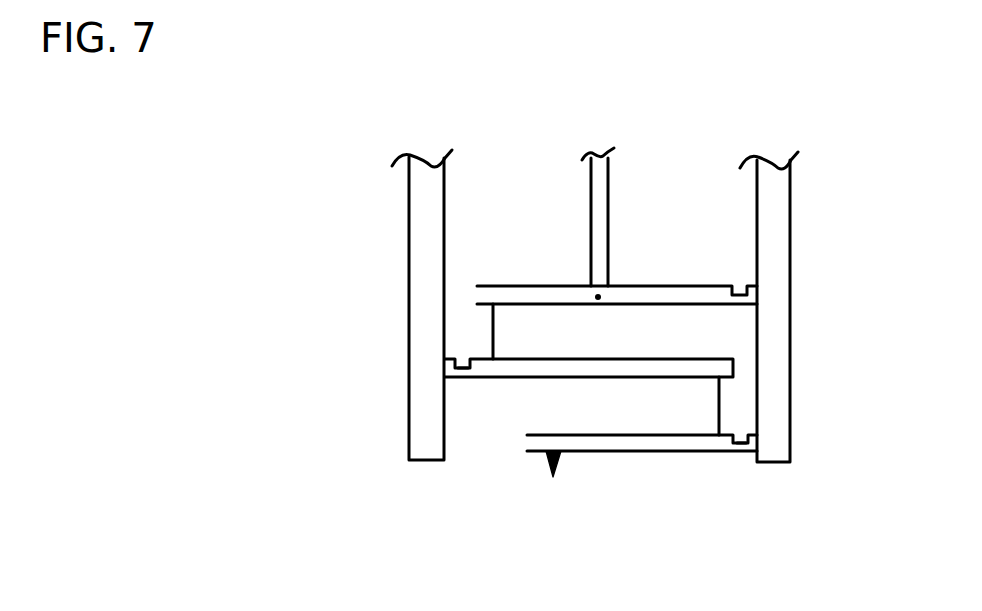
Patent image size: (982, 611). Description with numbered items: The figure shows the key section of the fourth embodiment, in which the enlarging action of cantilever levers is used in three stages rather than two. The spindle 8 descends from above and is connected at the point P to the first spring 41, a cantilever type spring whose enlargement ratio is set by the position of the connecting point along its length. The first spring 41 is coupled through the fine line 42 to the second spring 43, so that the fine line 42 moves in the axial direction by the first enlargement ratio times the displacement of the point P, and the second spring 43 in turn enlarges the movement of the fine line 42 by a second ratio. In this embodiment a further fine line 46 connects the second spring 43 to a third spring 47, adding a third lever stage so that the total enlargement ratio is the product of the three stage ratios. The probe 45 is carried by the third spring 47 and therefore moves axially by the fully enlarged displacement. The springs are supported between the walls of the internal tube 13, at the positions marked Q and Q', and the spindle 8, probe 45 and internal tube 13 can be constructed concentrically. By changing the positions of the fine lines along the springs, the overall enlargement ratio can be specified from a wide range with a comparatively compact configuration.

The spindle 8 is at (602, 203).
The internal tube 13 is at (778, 236).
The first spring 41 is at (670, 304).
The fine line 42 is at (493, 348).
The second spring 43 is at (580, 364).
The probe 45 is at (548, 462).
The fine line 46 is at (719, 405).
The third spring 47 is at (665, 451).
The connecting point P is at (598, 297).
The point Q is at (471, 395).
The point Q' is at (769, 507).